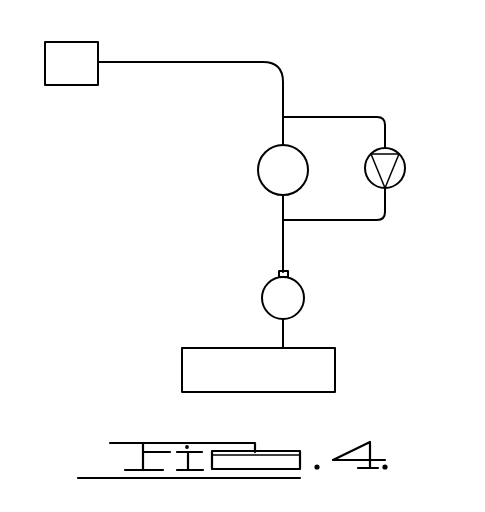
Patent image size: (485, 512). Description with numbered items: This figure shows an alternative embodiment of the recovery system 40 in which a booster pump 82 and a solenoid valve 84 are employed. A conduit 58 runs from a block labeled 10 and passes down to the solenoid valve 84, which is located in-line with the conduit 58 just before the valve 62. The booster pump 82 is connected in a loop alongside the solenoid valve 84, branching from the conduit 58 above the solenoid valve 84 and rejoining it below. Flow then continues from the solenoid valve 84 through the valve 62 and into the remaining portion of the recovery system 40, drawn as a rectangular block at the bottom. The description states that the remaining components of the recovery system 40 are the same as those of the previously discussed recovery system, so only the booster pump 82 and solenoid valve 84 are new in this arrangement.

The controller 10 is at (82, 85).
The conduit 58 is at (248, 62).
The solenoid valve 84 is at (258, 172).
The booster pump 82 is at (404, 158).
The valve 62 is at (304, 298).
The recovery system 40 is at (182, 360).